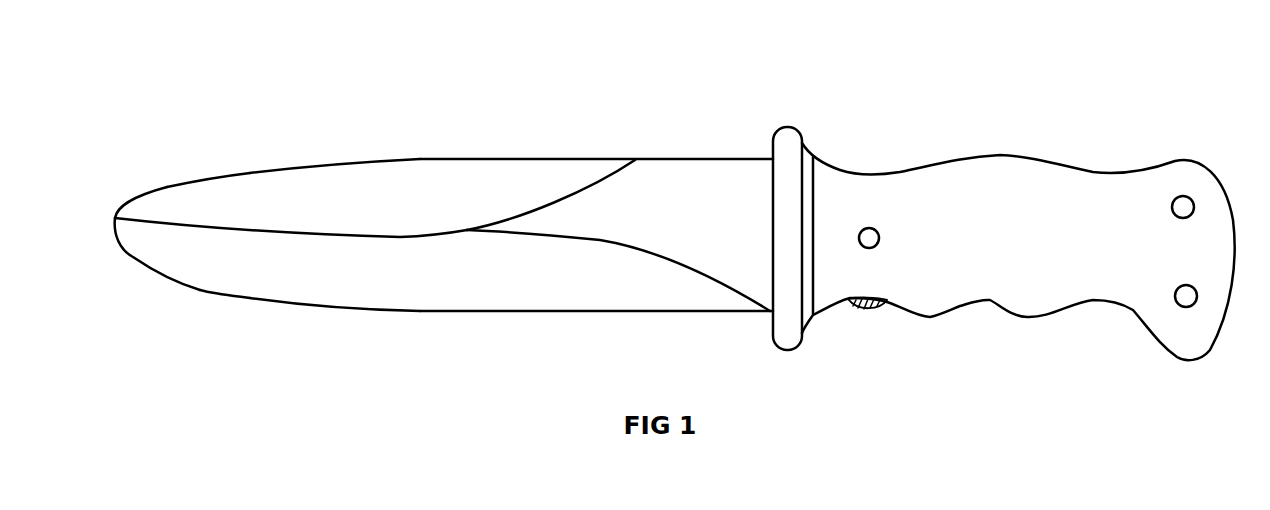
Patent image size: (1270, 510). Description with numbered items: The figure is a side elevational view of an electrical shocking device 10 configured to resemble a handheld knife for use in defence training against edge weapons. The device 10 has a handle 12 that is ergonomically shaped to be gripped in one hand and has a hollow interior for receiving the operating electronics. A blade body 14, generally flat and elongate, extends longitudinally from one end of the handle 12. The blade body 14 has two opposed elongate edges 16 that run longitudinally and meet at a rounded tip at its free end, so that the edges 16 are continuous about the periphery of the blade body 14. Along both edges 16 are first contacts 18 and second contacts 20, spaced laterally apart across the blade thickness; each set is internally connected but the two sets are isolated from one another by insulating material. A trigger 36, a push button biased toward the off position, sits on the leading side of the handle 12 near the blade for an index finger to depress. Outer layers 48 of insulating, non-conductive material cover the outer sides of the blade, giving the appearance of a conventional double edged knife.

The electrical shocking device 10 is at (402, 96).
The handle 12 is at (1031, 180).
The blade body 14 is at (428, 277).
The opposed elongate edges 16 is at (542, 159).
The first contacts 18 is at (315, 160).
The second contacts 20 is at (279, 163).
The trigger 36 is at (862, 313).
The outer layers 48 is at (208, 247).